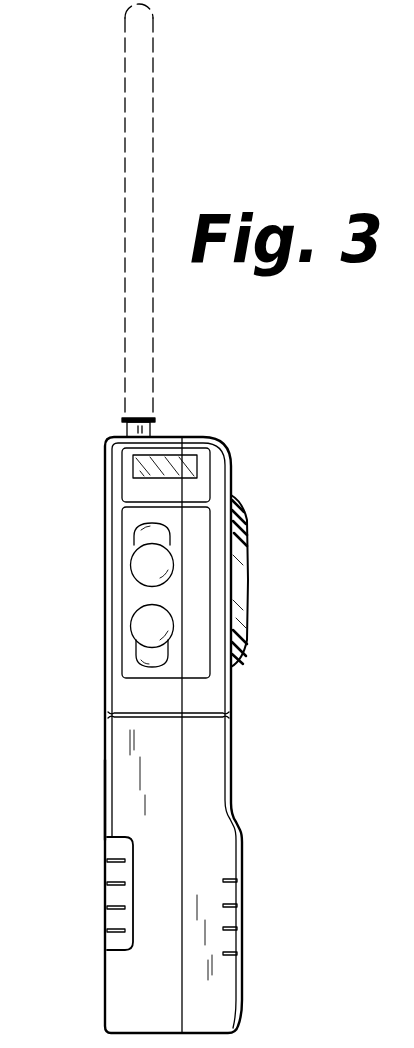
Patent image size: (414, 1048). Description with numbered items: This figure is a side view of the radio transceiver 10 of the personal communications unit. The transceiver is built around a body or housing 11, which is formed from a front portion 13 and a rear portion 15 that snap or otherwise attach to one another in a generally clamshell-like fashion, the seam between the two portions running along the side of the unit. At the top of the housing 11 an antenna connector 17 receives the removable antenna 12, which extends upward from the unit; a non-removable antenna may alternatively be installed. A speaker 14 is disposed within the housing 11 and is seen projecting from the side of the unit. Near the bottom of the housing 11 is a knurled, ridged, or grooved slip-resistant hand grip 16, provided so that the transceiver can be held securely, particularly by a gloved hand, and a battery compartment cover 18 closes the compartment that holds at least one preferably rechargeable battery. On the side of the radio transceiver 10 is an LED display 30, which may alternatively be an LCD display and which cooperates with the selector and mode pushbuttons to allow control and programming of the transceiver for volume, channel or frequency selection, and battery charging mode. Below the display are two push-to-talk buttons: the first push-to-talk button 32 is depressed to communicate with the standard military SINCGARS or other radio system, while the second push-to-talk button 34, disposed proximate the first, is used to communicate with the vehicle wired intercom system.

The radio transceiver 10 is at (88, 492).
The housing 11 is at (117, 743).
The removable antenna 12 is at (125, 335).
The front portion 13 is at (222, 758).
The speaker 14 is at (248, 585).
The rear portion 15 is at (110, 800).
The hand grip 16 is at (242, 930).
The antenna connector 17 is at (125, 422).
The battery compartment cover 18 is at (108, 898).
The LED display 30 is at (163, 460).
The first push-to-talk button 32 is at (130, 565).
The second push-to-talk button 34 is at (130, 625).